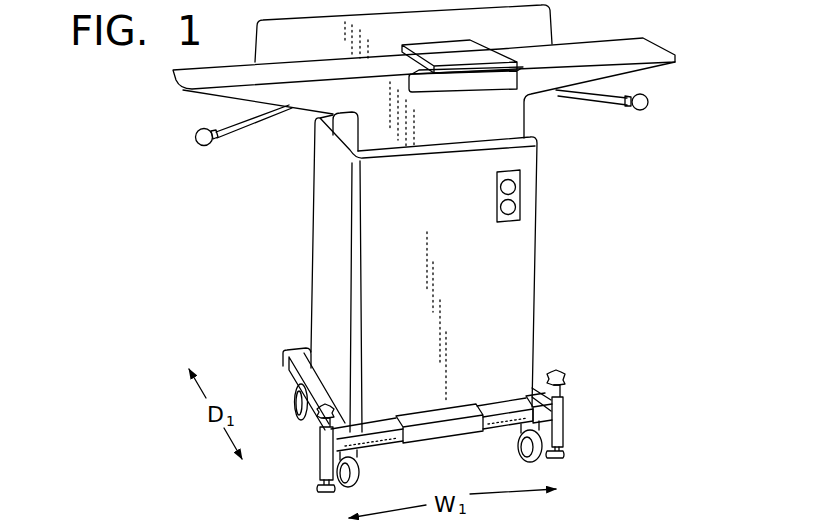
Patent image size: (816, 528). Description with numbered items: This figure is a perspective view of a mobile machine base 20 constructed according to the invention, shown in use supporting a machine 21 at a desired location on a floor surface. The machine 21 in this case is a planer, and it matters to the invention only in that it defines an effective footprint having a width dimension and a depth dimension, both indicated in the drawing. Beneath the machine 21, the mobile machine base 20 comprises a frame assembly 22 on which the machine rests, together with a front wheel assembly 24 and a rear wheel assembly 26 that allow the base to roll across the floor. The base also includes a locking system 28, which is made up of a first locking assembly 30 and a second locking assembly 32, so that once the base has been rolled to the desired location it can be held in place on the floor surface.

The mobile machine base 20 is at (595, 440).
The machine 21 is at (540, 226).
The frame assembly 22 is at (286, 371).
The front wheel assembly 24 is at (366, 476).
The rear wheel assembly 26 is at (288, 406).
The locking system 28 is at (579, 418).
The first locking assembly 30 is at (309, 459).
The second locking assembly 32 is at (569, 401).